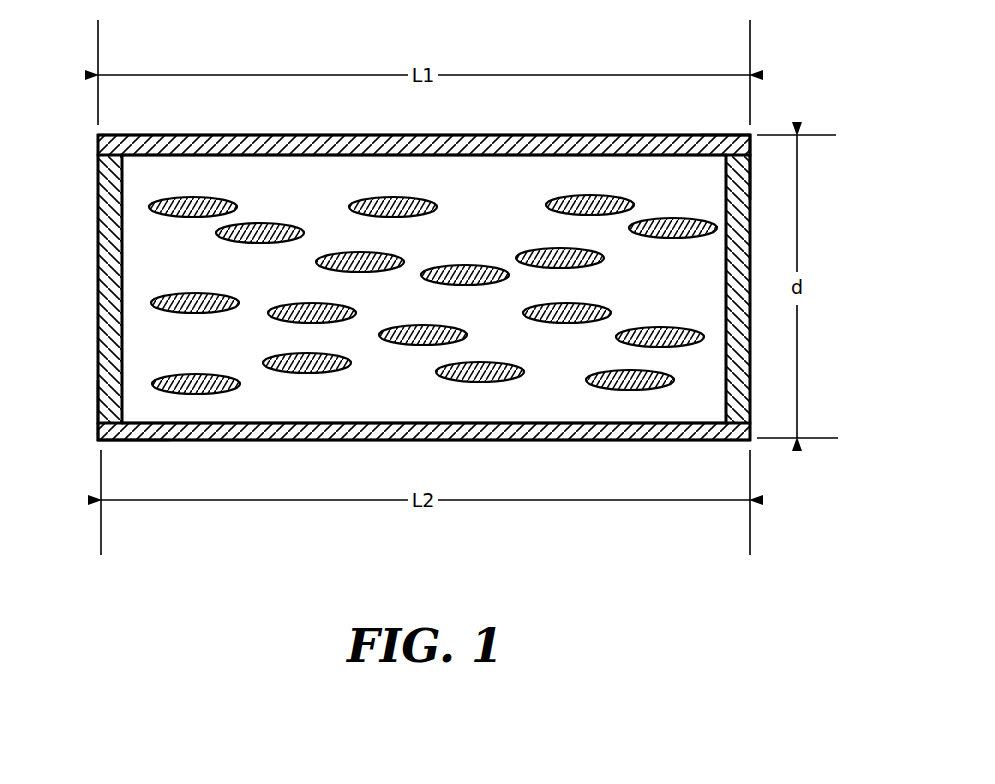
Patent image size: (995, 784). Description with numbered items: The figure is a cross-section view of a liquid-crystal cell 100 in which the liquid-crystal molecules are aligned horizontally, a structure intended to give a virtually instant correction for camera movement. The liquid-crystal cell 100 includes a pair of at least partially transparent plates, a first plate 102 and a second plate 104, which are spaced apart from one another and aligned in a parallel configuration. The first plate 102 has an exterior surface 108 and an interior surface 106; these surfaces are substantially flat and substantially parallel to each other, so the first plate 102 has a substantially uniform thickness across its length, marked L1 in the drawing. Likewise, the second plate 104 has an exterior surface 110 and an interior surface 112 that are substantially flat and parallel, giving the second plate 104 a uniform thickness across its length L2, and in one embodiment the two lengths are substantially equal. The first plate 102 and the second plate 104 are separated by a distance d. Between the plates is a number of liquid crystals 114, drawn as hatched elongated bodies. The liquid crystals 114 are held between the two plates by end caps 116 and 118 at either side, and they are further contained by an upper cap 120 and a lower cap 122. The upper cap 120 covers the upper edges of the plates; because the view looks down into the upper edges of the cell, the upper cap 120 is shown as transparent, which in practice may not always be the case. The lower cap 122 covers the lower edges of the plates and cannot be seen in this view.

The liquid-crystal cell 100 is at (780, 80).
The first plate 102 is at (648, 150).
The second plate 104 is at (640, 432).
The interior surface 106 is at (197, 134).
The exterior surface 108 is at (682, 150).
The exterior surface 110 is at (185, 441).
The interior surface 112 is at (155, 423).
The liquid crystals 114 is at (687, 227).
The end cap 116 is at (108, 182).
The end cap 118 is at (735, 378).
The upper cap 120 is at (532, 402).
The lower cap 122 is at (492, 187).